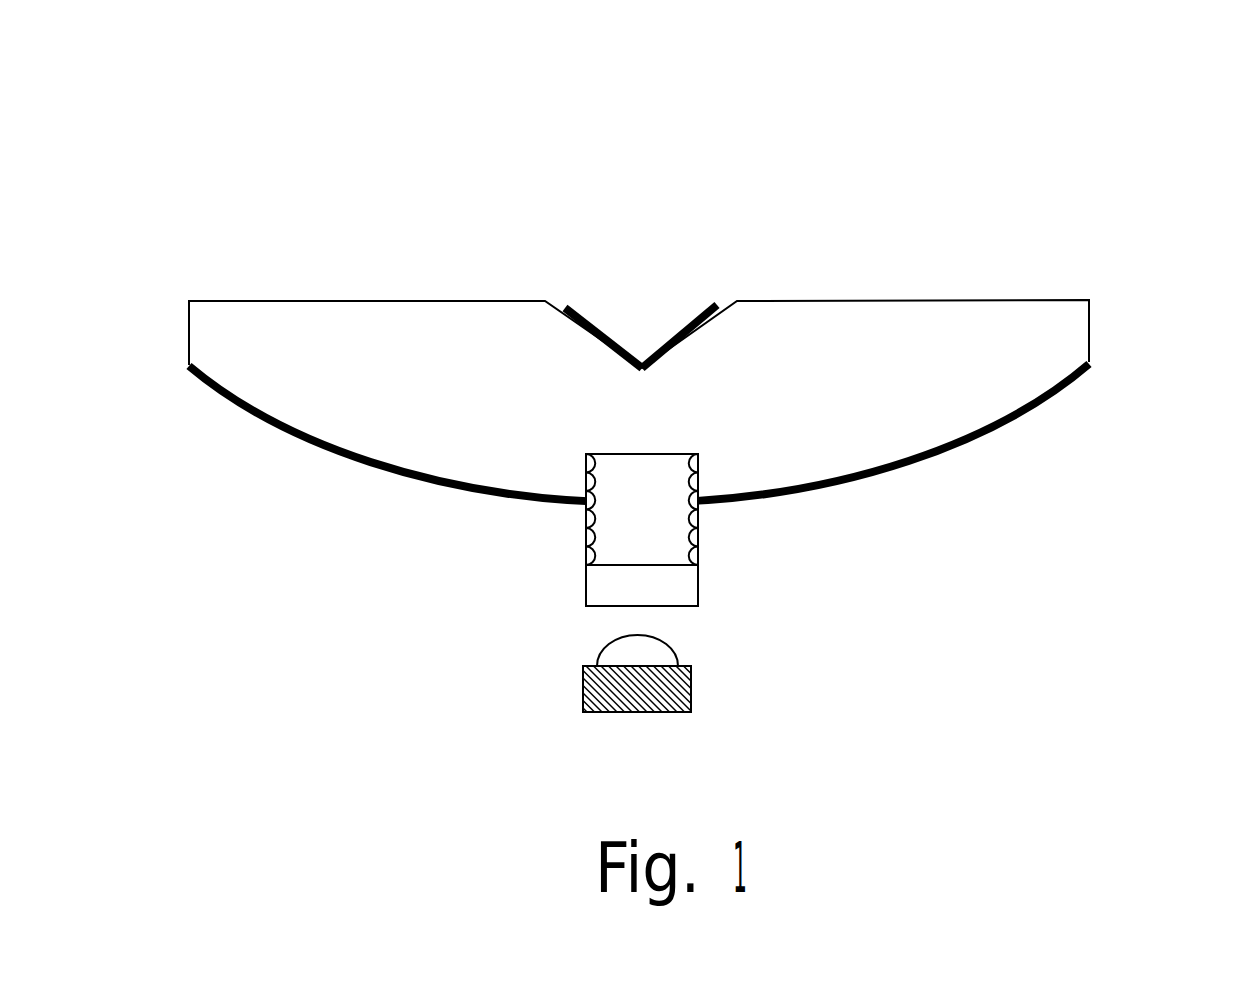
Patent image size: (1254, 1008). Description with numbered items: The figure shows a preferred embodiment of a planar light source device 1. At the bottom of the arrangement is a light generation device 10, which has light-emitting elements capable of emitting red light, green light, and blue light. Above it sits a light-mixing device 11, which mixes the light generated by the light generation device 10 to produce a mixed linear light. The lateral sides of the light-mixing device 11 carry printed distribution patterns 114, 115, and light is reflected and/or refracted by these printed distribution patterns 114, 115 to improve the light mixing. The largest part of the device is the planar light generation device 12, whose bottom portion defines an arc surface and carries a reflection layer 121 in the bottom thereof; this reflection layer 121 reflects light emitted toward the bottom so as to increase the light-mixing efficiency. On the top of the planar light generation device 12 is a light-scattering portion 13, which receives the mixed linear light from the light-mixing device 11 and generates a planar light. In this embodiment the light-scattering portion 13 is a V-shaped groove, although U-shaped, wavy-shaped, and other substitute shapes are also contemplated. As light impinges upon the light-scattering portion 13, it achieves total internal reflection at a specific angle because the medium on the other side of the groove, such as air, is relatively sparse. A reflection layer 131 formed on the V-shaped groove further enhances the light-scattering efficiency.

The planar light source device 1 is at (1063, 107).
The light generation device 10 is at (691, 680).
The light-mixing device 11 is at (618, 553).
The printed distribution pattern 114 is at (586, 520).
The printed distribution pattern 115 is at (698, 518).
The planar light generation device 12 is at (1055, 340).
The reflection layer 121 is at (293, 433).
The light-scattering portion 13 is at (693, 328).
The reflection layer 131 is at (587, 323).